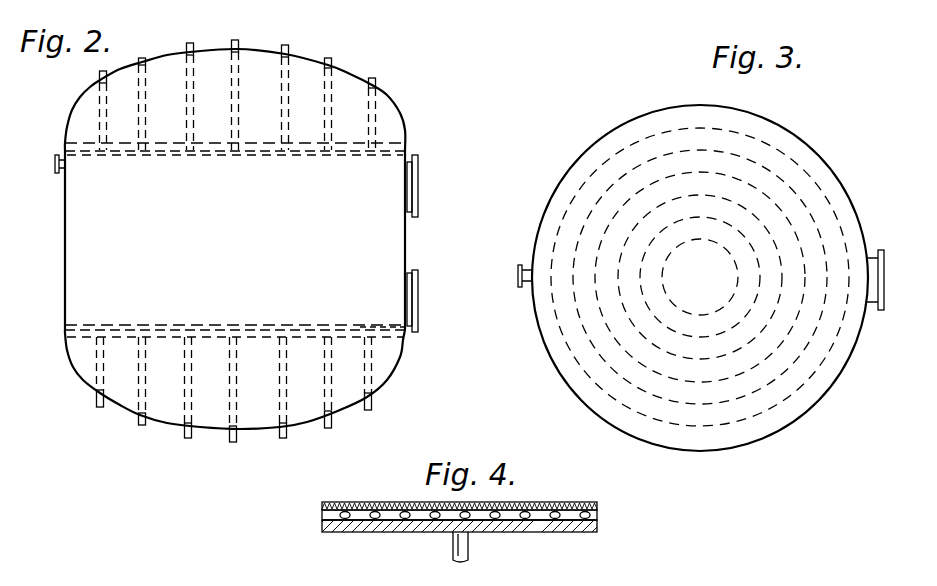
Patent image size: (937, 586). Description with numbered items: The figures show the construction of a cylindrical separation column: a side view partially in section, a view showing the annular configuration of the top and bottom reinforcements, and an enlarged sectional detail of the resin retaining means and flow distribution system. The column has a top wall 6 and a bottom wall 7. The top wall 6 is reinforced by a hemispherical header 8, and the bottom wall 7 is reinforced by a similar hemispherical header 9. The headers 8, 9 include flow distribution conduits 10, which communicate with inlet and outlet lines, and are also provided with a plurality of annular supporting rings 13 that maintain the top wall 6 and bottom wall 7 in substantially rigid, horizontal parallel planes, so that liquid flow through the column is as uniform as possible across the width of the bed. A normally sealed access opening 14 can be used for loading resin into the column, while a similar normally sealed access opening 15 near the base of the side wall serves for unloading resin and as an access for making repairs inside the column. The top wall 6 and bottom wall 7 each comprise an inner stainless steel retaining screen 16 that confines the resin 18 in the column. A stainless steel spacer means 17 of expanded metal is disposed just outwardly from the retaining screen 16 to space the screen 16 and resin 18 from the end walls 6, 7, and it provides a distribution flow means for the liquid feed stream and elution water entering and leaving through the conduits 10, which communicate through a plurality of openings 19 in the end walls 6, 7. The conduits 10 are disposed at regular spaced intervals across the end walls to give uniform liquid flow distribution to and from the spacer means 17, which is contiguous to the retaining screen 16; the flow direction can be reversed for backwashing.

In FIG. 2, the top wall 6 is at (251, 161).
In FIG. 4, the top wall 6 is at (469, 546).
In FIG. 2, the bottom wall 7 is at (250, 321).
In FIG. 4, the bottom wall 7 is at (580, 533).
In FIG. 2, the hemispherical header 8 is at (399, 115).
In FIG. 2, the hemispherical header 9 is at (400, 370).
In FIG. 2, the flow distribution conduit 10 is at (370, 78).
In FIG. 4, the flow distribution conduit 10 is at (471, 561).
In FIG. 3, the annular supporting ring 13 is at (802, 394).
In FIG. 2, the access opening 14 is at (420, 163).
In FIG. 2, the access opening 15 is at (418, 283).
In FIG. 2, the retaining screen 16 is at (142, 430).
In FIG. 4, the retaining screen 16 is at (560, 505).
In FIG. 4, the spacer means 17 is at (598, 521).
In FIG. 2, the resin 18 is at (385, 322).
In FIG. 4, the opening 19 is at (453, 536).